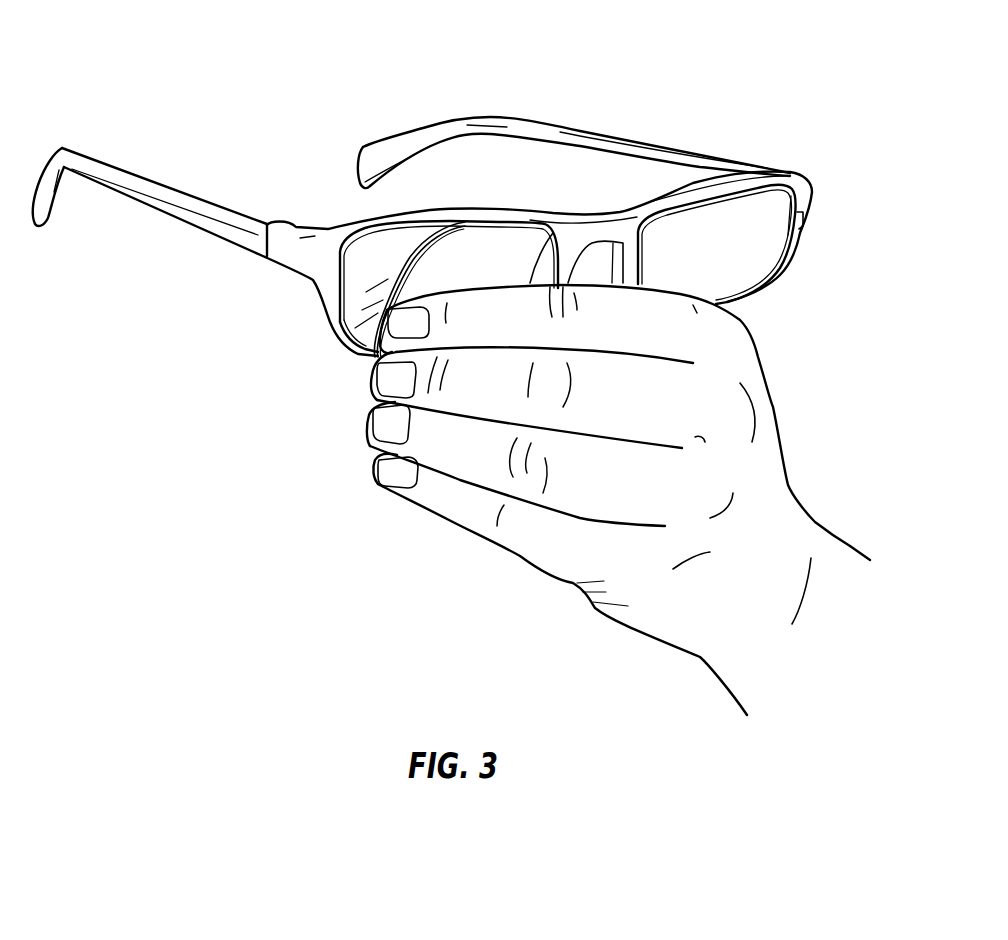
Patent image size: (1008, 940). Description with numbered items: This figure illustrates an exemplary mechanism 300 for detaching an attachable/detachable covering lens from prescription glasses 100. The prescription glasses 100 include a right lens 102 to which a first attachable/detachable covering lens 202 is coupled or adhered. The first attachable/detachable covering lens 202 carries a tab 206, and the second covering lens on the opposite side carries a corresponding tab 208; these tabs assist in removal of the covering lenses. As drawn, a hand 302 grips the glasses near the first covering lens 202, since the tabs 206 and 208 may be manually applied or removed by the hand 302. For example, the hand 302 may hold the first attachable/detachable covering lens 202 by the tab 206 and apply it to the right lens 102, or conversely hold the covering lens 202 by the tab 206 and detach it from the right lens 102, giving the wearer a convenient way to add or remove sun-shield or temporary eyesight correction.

The prescription glasses 100 is at (168, 182).
The right lens 102 is at (370, 256).
The first attachable/detachable covering lens 202 is at (366, 318).
The tab 206 is at (405, 298).
The tab 208 is at (803, 218).
The scene of holding device 300 is at (309, 50).
The hand 302 is at (758, 354).